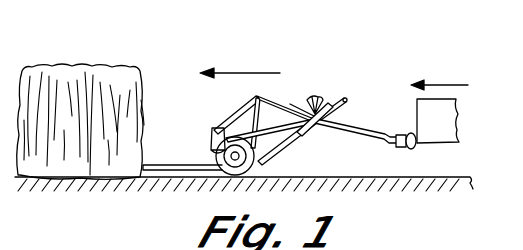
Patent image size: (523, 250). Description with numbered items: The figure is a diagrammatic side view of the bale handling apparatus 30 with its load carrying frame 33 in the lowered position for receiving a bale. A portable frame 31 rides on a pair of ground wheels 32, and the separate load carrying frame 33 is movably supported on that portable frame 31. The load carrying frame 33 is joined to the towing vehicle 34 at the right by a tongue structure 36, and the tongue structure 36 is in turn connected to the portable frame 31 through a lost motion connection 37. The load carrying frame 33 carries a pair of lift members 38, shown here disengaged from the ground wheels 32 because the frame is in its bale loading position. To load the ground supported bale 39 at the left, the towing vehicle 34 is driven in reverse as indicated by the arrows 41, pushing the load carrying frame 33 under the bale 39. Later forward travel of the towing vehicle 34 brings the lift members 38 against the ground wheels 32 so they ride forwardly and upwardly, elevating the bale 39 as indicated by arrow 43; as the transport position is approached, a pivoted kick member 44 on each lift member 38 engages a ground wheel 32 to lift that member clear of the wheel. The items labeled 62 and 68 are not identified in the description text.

The apparatus 30 is at (343, 72).
The portable frame 31 is at (282, 118).
The ground wheels 32 is at (225, 180).
The load carrying frame 33 is at (232, 109).
The towing vehicle 34 is at (448, 117).
The tongue structure 36 is at (369, 126).
The lost motion connection 37 is at (312, 133).
The lift members 38 is at (214, 130).
The bale 39 is at (120, 80).
The arrows 41 is at (441, 84).
The arrow 43 is at (522, 146).
The pivoted kick member 44 is at (510, 229).
The ground 62 is at (166, 181).
The hitch pin 68 is at (402, 149).